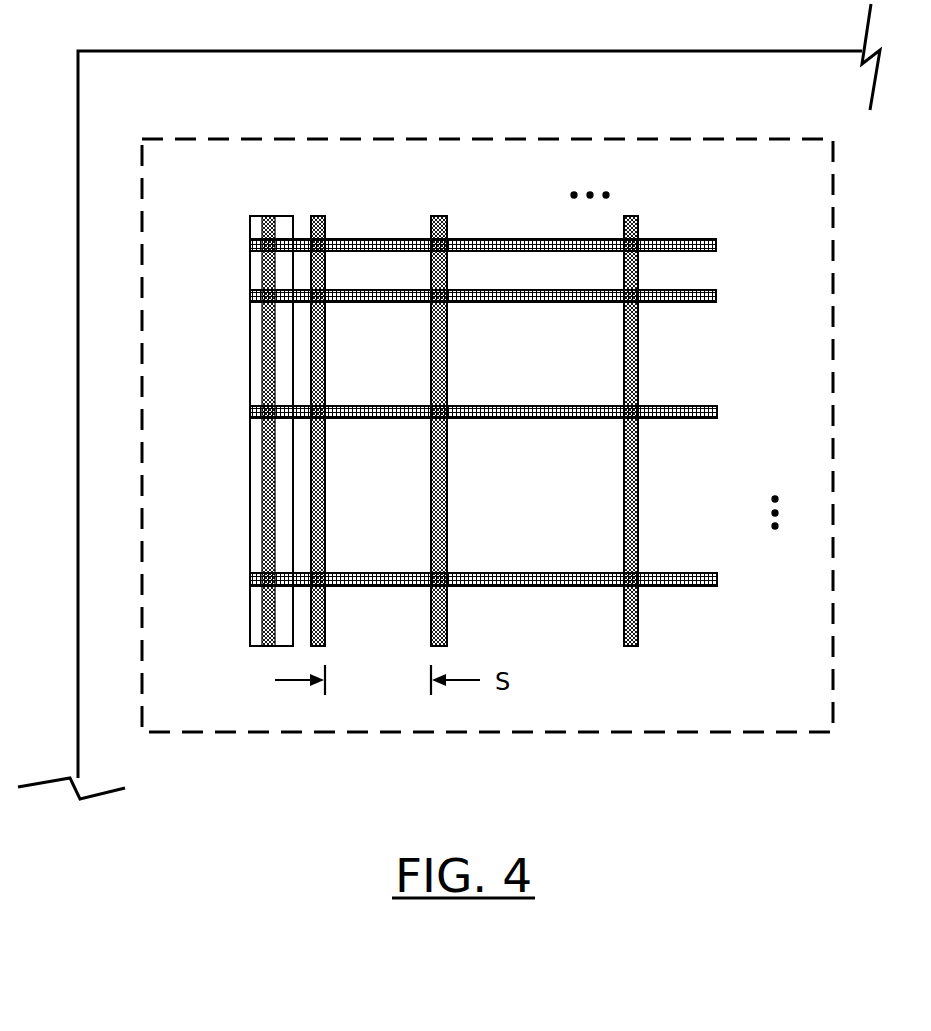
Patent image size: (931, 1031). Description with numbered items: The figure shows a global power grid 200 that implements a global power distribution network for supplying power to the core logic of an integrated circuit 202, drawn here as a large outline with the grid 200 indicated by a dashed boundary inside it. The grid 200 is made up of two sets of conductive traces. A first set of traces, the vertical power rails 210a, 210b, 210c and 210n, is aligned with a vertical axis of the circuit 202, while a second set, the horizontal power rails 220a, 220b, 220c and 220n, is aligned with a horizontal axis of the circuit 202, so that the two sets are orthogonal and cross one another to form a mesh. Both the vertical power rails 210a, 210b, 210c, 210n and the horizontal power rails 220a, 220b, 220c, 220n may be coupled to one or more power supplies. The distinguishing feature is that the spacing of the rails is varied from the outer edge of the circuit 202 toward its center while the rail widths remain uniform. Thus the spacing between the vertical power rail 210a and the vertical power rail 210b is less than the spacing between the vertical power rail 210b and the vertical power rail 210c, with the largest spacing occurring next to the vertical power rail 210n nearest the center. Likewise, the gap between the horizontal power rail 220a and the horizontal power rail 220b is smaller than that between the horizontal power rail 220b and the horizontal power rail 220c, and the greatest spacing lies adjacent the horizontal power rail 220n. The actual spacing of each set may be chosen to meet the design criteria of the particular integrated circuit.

The integrated circuit 202 is at (163, 50).
The global power grid 200 is at (232, 140).
The vertical power rail 210a is at (270, 215).
The vertical power rail 210b is at (318, 215).
The vertical power rail 210c is at (440, 215).
The vertical power rail 210n is at (631, 215).
The horizontal power rail 220a is at (716, 245).
The horizontal power rail 220b is at (716, 296).
The horizontal power rail 220c is at (717, 412).
The horizontal power rail 220n is at (717, 579).